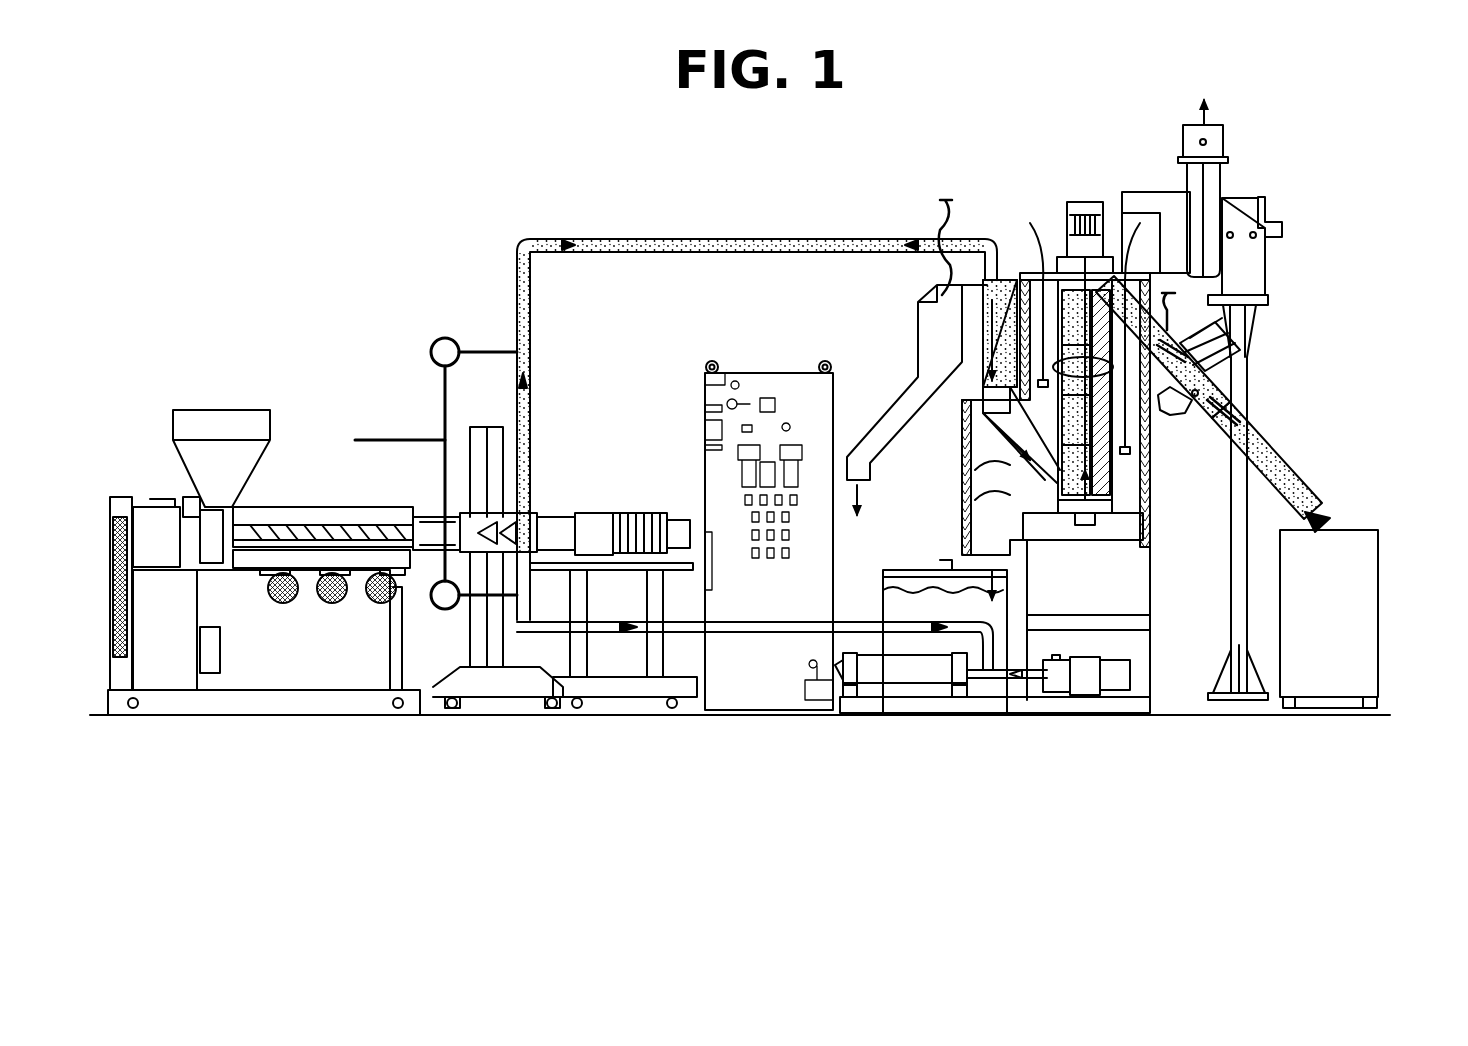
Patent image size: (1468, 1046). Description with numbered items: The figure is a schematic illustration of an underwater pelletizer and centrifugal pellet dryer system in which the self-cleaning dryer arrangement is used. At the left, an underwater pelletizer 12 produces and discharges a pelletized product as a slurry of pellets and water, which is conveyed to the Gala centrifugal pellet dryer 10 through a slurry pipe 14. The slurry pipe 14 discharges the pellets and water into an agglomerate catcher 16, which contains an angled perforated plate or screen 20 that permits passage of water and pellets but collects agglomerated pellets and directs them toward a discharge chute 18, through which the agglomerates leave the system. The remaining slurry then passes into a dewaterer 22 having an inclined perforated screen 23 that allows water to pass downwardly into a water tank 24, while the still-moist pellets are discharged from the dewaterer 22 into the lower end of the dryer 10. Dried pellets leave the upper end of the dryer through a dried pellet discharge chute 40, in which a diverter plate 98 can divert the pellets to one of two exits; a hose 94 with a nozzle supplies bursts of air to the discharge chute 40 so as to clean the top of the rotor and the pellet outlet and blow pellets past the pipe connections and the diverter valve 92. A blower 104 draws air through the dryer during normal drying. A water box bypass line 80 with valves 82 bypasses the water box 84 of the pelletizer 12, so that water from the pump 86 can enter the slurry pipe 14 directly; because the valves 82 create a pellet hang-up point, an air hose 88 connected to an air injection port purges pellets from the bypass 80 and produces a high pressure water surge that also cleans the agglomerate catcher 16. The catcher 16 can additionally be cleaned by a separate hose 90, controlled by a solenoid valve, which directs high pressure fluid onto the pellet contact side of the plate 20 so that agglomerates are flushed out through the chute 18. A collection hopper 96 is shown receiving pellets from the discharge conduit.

The centrifugal pellet dryer 10 is at (1078, 200).
The underwater pelletizer 12 is at (588, 500).
The slurry pipe 14 is at (662, 240).
The agglomerate catcher 16 is at (905, 310).
The discharge chute 18 is at (890, 420).
The angled perforated plate 20 is at (995, 272).
The dewaterer 22 is at (990, 497).
The inclined perforated screen 23 is at (988, 447).
The water tank 24 is at (917, 607).
The dried pellet discharge chute 40 is at (1283, 460).
The water box bypass line 80 is at (430, 390).
The valves 82 is at (430, 350).
The water box 84 is at (525, 520).
The pump 86 is at (900, 672).
The air hose 88 is at (386, 440).
The hose 90 is at (940, 210).
The diverter valve 92 is at (1225, 373).
The hose 94 is at (1178, 320).
The collection hopper 96 is at (1360, 635).
The diverter plate 98 is at (1175, 412).
The blower 104 is at (1212, 180).